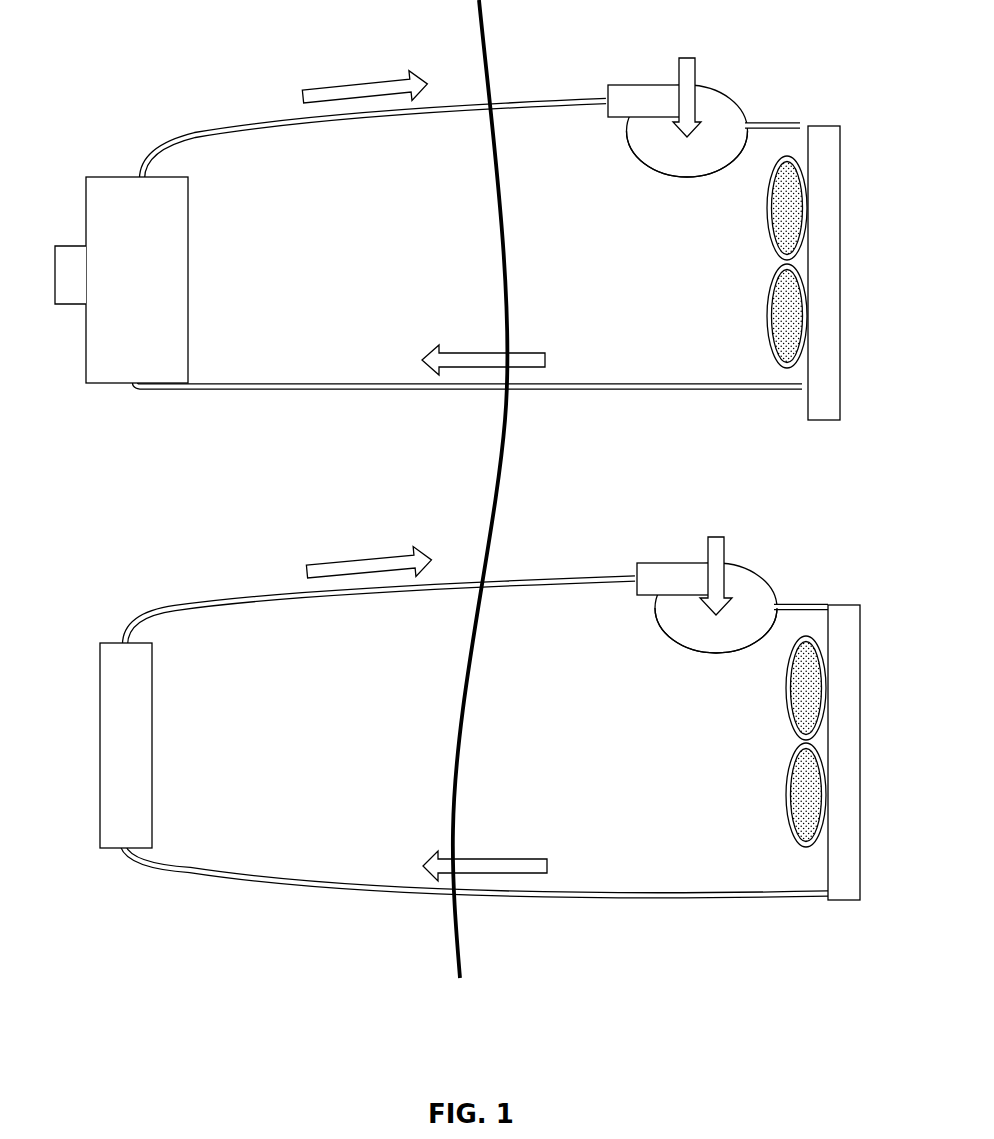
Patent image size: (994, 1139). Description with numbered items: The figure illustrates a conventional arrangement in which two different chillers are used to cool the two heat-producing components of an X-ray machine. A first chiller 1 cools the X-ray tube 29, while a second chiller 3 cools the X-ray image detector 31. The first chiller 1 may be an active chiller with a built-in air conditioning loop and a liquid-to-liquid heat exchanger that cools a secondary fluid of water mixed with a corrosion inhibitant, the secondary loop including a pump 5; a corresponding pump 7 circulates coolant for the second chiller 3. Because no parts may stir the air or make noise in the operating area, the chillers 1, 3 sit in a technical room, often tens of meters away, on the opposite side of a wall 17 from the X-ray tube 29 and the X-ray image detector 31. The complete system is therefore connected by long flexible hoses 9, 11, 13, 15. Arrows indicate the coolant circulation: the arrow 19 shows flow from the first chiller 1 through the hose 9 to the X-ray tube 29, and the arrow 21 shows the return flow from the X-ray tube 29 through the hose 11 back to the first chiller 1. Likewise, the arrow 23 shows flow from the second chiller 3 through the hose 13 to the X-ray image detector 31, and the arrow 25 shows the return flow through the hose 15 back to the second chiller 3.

The first chiller 1 is at (786, 156).
The second chiller 3 is at (807, 636).
The pump 5 is at (742, 108).
The pump 7 is at (767, 580).
The flexible hose 9 is at (262, 392).
The flexible hose 11 is at (208, 130).
The flexible hose 13 is at (240, 885).
The flexible hose 15 is at (208, 603).
The wall 17 is at (502, 460).
The arrow 19 is at (478, 351).
The arrow 21 is at (357, 83).
The arrow 23 is at (492, 857).
The arrow 25 is at (352, 556).
The X-ray tube 29 is at (188, 278).
The X-ray image detector 31 is at (152, 746).